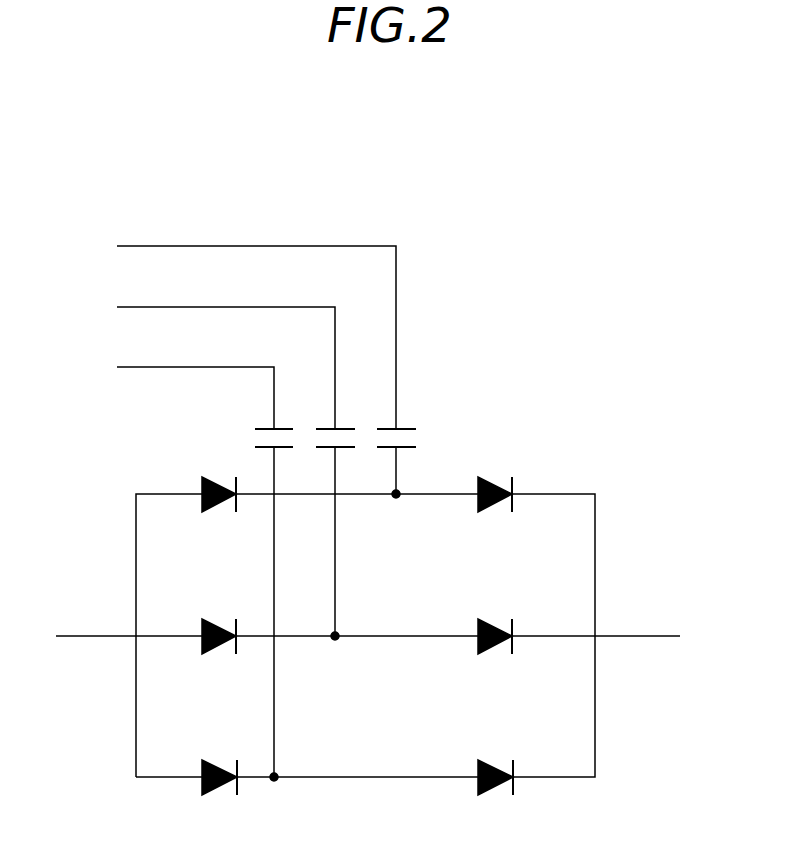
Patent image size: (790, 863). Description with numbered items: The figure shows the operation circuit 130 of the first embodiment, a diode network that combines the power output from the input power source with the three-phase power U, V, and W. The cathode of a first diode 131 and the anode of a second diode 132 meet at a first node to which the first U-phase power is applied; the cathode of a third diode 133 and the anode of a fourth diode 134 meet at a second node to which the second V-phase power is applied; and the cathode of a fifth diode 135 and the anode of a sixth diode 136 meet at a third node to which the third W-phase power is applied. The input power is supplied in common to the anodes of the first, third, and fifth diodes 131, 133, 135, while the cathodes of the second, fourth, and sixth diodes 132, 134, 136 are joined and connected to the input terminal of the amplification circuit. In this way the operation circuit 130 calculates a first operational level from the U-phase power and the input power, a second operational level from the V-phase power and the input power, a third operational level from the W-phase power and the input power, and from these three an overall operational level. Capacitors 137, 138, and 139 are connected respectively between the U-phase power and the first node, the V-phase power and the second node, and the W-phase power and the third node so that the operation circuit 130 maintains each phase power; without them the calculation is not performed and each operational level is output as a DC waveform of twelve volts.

The operation circuit 130 is at (116, 180).
The first diode 131 is at (210, 477).
The second diode 132 is at (488, 477).
The third diode 133 is at (213, 620).
The fourth diode 134 is at (495, 620).
The fifth diode 135 is at (217, 760).
The sixth diode 136 is at (487, 760).
The capacitor 137 is at (408, 422).
The capacitor 138 is at (343, 422).
The capacitor 139 is at (282, 422).